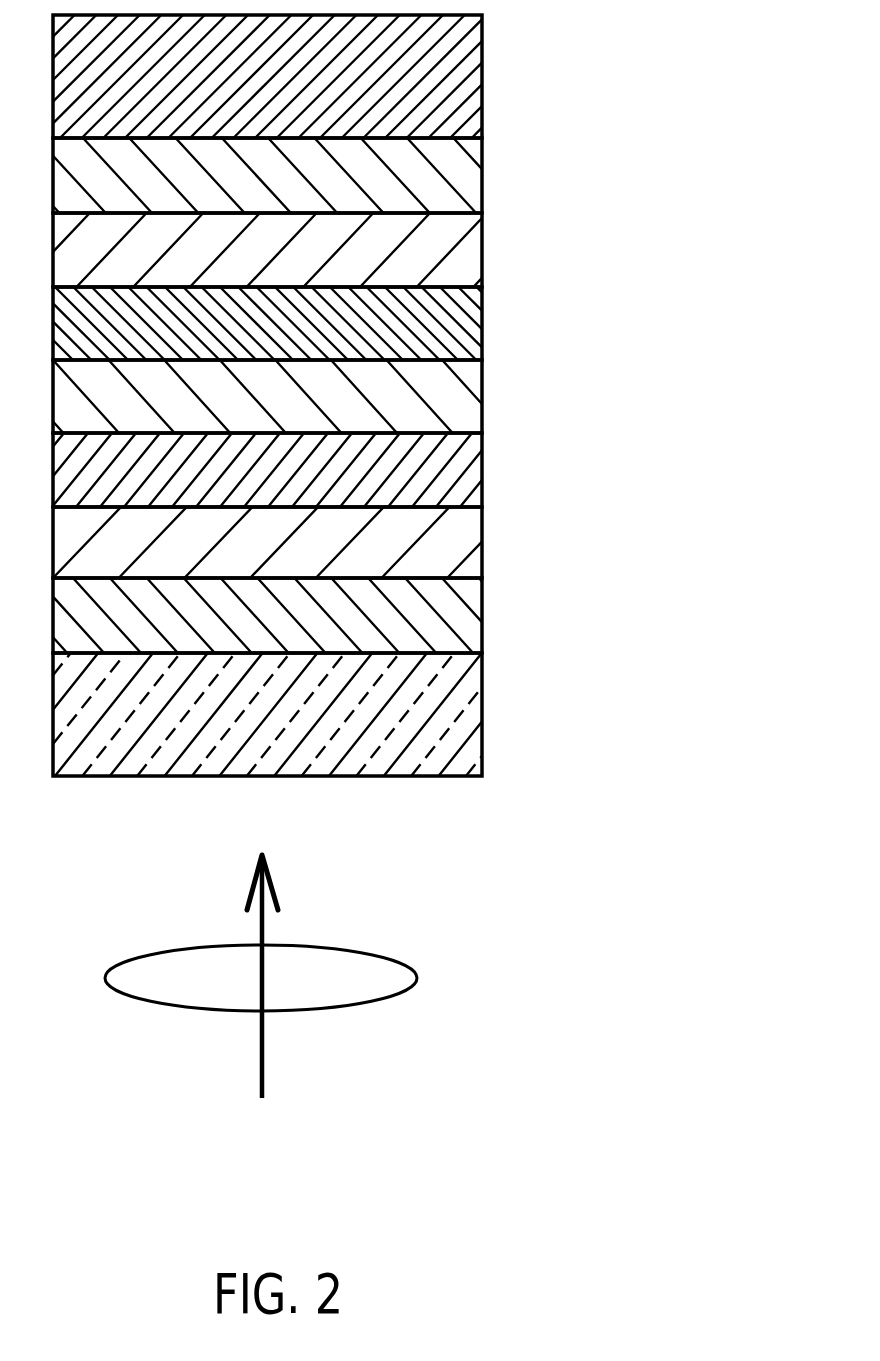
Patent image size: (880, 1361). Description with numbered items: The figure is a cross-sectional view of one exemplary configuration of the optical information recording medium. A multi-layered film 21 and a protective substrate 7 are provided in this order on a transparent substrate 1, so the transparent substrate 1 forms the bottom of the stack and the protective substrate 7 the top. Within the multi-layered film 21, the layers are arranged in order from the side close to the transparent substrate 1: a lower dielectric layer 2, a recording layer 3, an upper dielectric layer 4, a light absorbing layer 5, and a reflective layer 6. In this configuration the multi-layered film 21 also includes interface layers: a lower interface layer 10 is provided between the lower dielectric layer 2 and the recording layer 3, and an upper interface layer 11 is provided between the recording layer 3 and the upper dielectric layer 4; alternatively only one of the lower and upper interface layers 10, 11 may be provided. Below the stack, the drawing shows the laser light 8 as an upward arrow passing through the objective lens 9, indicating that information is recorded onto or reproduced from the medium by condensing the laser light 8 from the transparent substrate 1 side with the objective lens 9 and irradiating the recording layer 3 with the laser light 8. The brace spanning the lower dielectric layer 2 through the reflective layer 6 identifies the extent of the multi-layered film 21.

The transparent substrate 1 is at (482, 713).
The lower dielectric layer 2 is at (305, 615).
The recording layer 3 is at (482, 470).
The upper dielectric layer 4 is at (482, 323).
The light absorbing layer 5 is at (482, 249).
The reflective layer 6 is at (482, 176).
The protective substrate 7 is at (482, 81).
The laser light 8 is at (264, 1073).
The objective lens 9 is at (417, 978).
The lower interface layer 10 is at (482, 545).
The upper interface layer 11 is at (482, 397).
The multi-layered film 21 is at (389, 397).